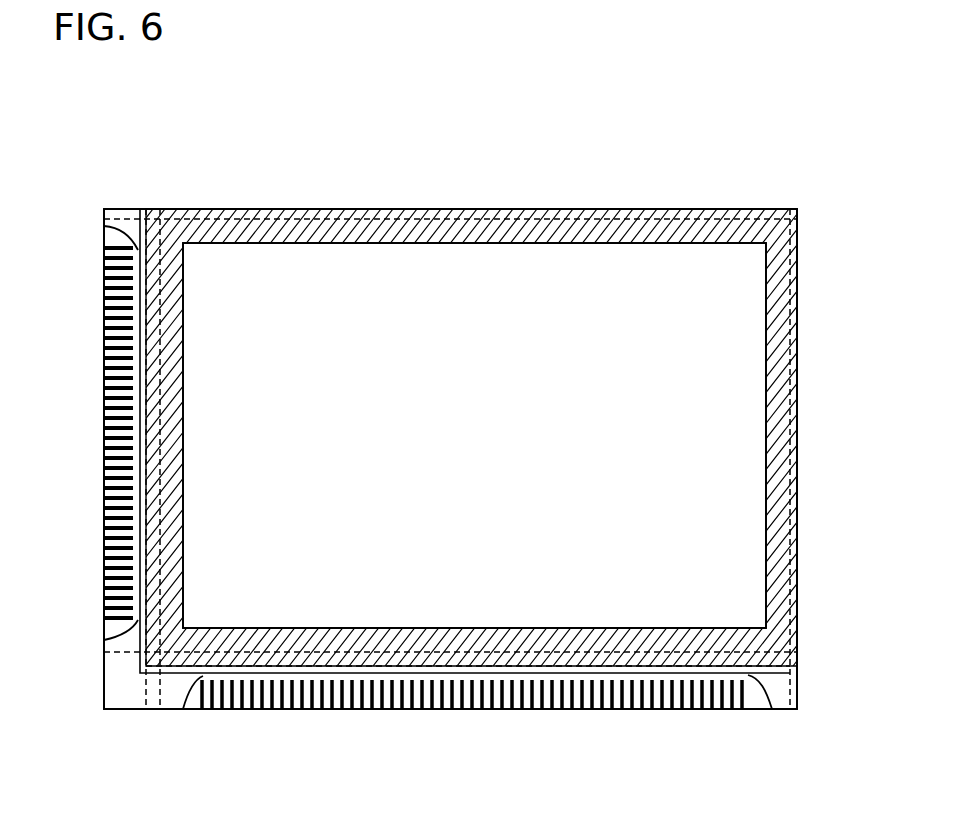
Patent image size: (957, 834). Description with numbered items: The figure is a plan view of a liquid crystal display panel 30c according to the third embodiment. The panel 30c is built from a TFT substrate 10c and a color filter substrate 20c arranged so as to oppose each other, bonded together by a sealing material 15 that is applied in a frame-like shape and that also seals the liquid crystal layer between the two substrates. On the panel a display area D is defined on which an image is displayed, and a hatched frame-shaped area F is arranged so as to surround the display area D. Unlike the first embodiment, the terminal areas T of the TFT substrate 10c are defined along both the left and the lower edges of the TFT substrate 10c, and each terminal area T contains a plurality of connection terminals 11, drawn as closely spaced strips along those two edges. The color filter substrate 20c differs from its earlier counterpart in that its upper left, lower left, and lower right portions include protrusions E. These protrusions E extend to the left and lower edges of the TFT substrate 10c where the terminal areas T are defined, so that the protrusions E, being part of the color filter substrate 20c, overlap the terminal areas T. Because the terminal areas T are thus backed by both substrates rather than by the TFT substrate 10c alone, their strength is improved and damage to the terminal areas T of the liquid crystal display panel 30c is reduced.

The liquid crystal display panel 30c is at (172, 141).
The TFT substrate 10c is at (757, 700).
The color filter substrate 20c is at (777, 697).
The sealing material 15 is at (640, 212).
The frame-shaped area F is at (585, 232).
The display area D is at (486, 447).
The protrusion E is at (104, 225).
The terminal area T is at (145, 204).
The connection terminal 11 is at (100, 250).